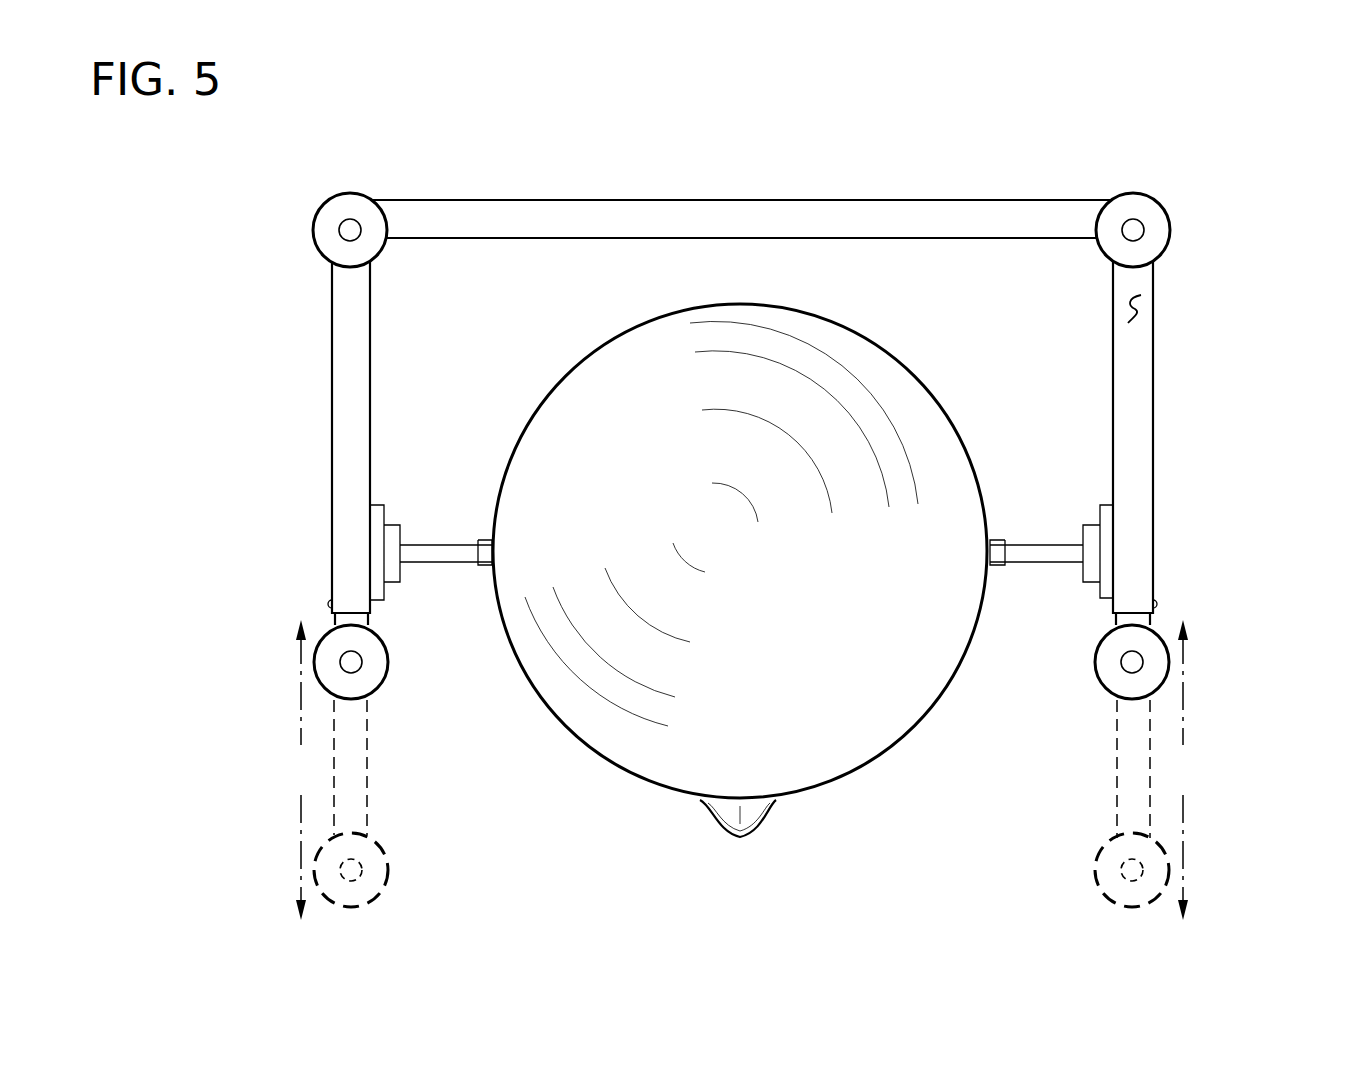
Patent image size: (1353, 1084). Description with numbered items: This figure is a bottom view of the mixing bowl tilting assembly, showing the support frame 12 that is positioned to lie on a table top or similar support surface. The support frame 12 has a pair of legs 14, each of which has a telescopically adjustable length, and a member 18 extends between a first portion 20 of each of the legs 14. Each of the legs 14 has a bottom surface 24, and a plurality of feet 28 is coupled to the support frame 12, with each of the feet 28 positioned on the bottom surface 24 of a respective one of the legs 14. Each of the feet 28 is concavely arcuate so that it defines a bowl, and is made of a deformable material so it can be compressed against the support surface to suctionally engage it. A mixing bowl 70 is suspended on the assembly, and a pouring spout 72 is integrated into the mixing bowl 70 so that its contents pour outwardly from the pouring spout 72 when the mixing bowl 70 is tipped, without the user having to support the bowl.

The support frame 12 is at (992, 170).
The legs 14 is at (314, 483).
The member 18 is at (770, 200).
The first portion 20 is at (331, 300).
The bottom surface 24 is at (1153, 300).
The feet 28 is at (330, 216).
The mixing bowl 70 is at (920, 775).
The pouring spout 72 is at (757, 823).